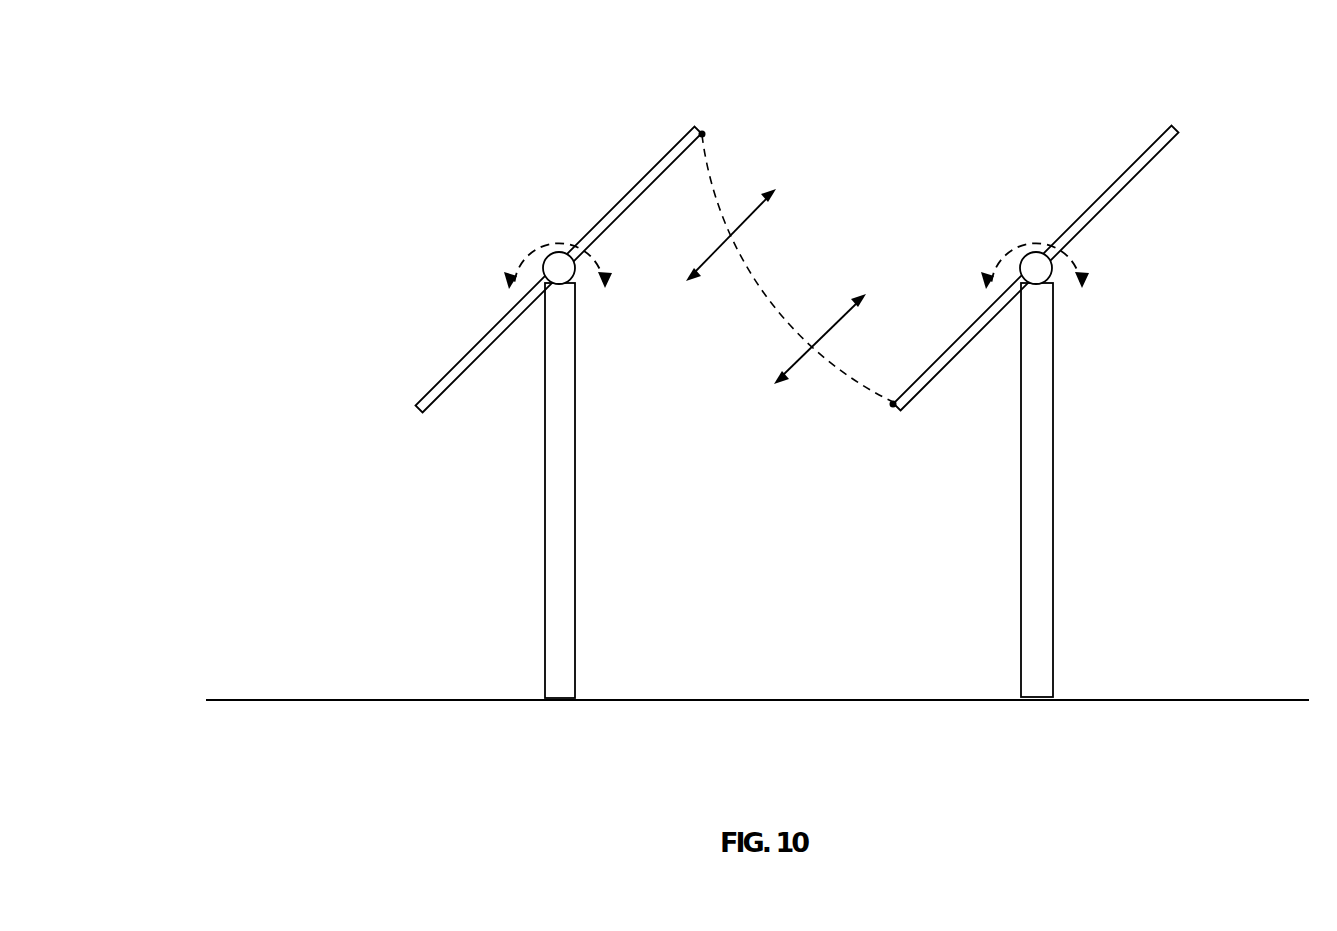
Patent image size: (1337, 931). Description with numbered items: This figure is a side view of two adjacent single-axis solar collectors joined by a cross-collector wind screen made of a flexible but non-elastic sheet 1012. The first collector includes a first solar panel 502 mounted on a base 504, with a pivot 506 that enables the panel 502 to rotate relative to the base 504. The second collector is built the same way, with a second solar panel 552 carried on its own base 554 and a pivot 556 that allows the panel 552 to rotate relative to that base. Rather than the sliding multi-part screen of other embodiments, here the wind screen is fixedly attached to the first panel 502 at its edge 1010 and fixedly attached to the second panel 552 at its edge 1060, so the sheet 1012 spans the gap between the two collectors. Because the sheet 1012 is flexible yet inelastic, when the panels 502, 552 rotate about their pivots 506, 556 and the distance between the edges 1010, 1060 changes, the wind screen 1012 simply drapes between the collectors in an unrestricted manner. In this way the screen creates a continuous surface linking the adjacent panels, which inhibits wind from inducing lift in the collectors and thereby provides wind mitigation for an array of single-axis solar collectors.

The first solar panel 502 is at (472, 343).
The base 504 is at (544, 563).
The pivot 506 is at (545, 260).
The second solar panel 552 is at (1143, 152).
The base 554 is at (1021, 650).
The pivot 556 is at (1050, 270).
The edge 1010 is at (703, 132).
The flexible non-elastic sheet 1012 is at (760, 283).
The edge 1060 is at (897, 412).